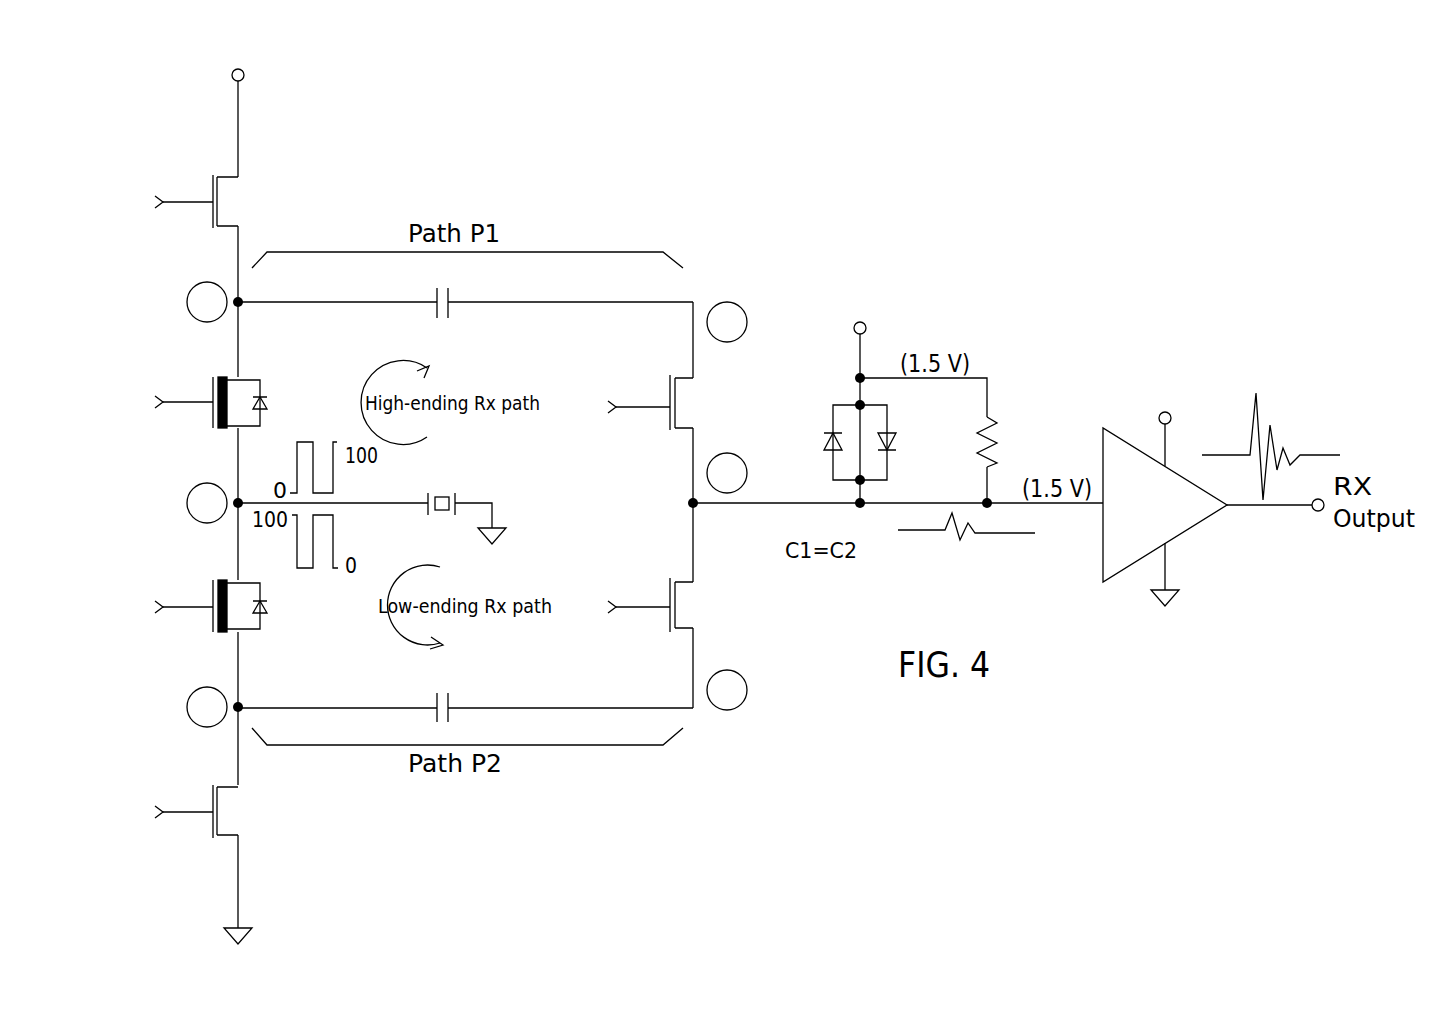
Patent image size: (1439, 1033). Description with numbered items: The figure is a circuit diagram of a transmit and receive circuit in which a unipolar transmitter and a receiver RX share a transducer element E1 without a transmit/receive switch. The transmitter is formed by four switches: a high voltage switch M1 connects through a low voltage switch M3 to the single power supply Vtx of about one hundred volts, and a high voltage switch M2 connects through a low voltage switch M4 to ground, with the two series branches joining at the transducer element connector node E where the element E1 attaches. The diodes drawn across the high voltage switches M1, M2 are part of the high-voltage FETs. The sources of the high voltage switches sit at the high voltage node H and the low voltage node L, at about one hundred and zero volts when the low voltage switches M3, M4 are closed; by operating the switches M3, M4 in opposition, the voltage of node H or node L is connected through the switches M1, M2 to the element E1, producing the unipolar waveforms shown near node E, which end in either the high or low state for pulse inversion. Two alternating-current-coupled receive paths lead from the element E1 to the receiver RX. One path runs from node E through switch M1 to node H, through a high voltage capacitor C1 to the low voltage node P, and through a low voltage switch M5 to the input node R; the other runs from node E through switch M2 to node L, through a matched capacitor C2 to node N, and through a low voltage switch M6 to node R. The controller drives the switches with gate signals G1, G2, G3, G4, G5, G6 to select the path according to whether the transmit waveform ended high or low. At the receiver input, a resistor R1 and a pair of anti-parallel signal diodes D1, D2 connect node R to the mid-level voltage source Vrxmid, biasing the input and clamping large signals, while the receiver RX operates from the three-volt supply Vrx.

The power supply Vtx is at (294, 104).
The low voltage switch M3 is at (241, 201).
The gate signal G3 is at (167, 203).
The high voltage switch M1 is at (259, 402).
The gate signal G1 is at (167, 405).
The high voltage switch M2 is at (259, 606).
The gate signal G2 is at (167, 608).
The low voltage switch M4 is at (240, 811).
The gate signal G4 is at (167, 812).
The high voltage node H is at (215, 302).
The transducer element connector node E is at (215, 503).
The low voltage node L is at (215, 707).
The low voltage node P is at (727, 322).
The input node R is at (717, 480).
The low voltage node N is at (727, 690).
The capacitor C1 is at (465, 285).
The capacitor C2 is at (465, 691).
The low voltage switch M5 is at (697, 402).
The gate signal G5 is at (622, 404).
The low voltage switch M6 is at (697, 605).
The gate signal G6 is at (622, 607).
The transducer element E1 is at (372, 498).
The mid-level voltage source Vrxmid is at (860, 395).
The signal diode D1 is at (820, 442).
The signal diode D2 is at (900, 442).
The resistor R1 is at (1005, 442).
The receiver RX is at (1213, 515).
The receiver power Vrx is at (1166, 397).